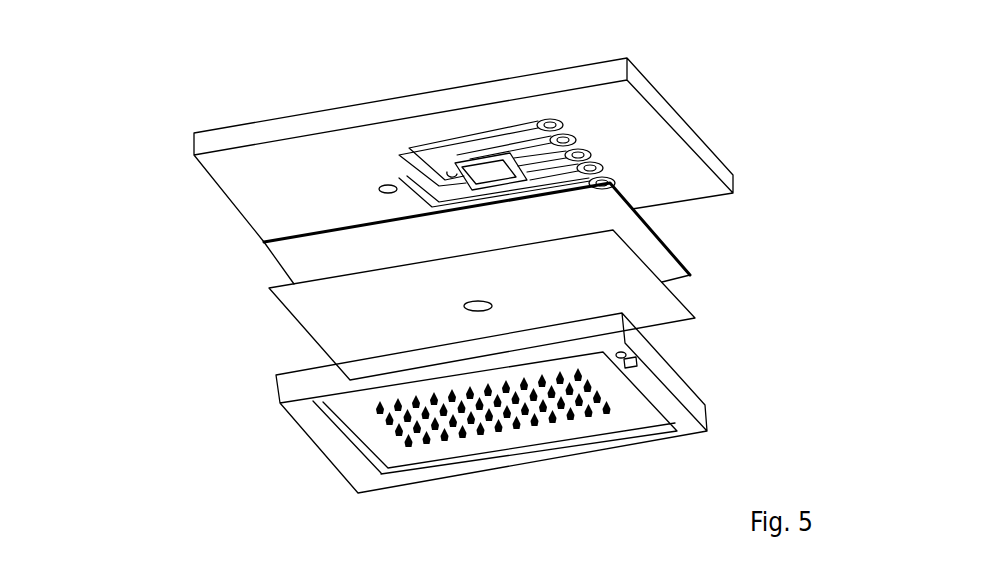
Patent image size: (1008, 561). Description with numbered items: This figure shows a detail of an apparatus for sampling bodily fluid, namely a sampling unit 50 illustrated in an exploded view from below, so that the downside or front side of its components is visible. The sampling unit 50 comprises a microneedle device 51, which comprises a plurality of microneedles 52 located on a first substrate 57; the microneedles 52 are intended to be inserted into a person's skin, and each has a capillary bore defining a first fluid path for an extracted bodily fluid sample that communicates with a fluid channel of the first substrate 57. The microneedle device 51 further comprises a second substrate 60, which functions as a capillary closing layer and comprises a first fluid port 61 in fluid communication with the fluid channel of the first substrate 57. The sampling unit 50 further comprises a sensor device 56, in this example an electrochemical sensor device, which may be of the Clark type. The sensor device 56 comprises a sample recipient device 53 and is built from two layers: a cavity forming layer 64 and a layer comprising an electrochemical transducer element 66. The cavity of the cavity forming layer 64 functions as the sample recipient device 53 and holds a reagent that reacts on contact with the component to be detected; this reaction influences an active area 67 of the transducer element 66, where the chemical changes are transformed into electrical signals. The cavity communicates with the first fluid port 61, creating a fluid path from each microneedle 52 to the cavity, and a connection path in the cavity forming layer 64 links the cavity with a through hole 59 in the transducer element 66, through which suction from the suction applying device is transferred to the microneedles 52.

The sampling unit 50 is at (181, 236).
The microneedle device 51 is at (702, 372).
The microneedles 52 is at (570, 420).
The sample recipient device 53 is at (451, 313).
The sensor device 56 is at (254, 272).
The first substrate 57 is at (639, 407).
The through hole 59 is at (381, 183).
The second substrate 60 is at (695, 302).
The first fluid port 61 is at (490, 301).
The cavity forming layer 64 is at (680, 250).
The transducer element 66 is at (694, 110).
The active area 67 is at (449, 171).